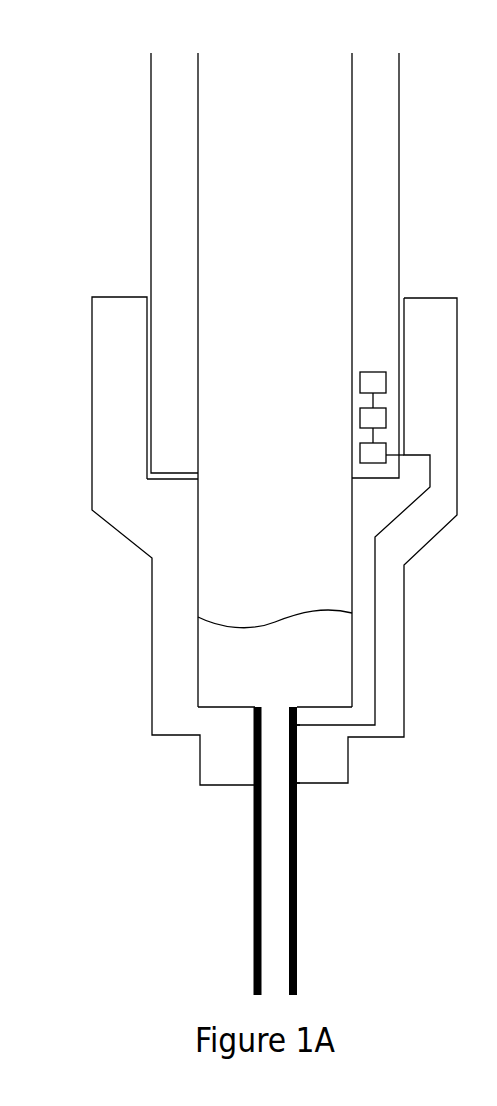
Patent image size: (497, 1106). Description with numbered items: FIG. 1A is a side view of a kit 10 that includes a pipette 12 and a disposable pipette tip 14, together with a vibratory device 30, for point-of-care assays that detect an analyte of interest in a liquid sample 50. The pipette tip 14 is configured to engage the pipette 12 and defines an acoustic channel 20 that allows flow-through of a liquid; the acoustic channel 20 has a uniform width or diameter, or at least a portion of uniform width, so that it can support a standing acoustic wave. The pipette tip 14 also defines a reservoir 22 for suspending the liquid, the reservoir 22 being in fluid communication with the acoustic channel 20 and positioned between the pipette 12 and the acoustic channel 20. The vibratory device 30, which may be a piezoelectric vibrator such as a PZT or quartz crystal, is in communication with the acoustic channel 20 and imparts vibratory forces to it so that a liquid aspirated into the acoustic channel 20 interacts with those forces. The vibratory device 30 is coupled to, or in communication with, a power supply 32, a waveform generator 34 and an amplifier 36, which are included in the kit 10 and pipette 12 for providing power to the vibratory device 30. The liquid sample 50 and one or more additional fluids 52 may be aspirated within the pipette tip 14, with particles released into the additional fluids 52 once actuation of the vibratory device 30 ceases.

The kit 10 is at (275, 380).
The pipette 12 is at (261, 160).
The pipette tip 14 is at (274, 541).
The acoustic channel 20 is at (276, 851).
The reservoir 22 is at (275, 634).
The vibratory device 30 is at (297, 727).
The power supply 32 is at (360, 376).
The waveform generator 34 is at (360, 410).
The amplifier 36 is at (360, 446).
The liquid sample 50 is at (275, 646).
The additional fluids 52 is at (275, 681).